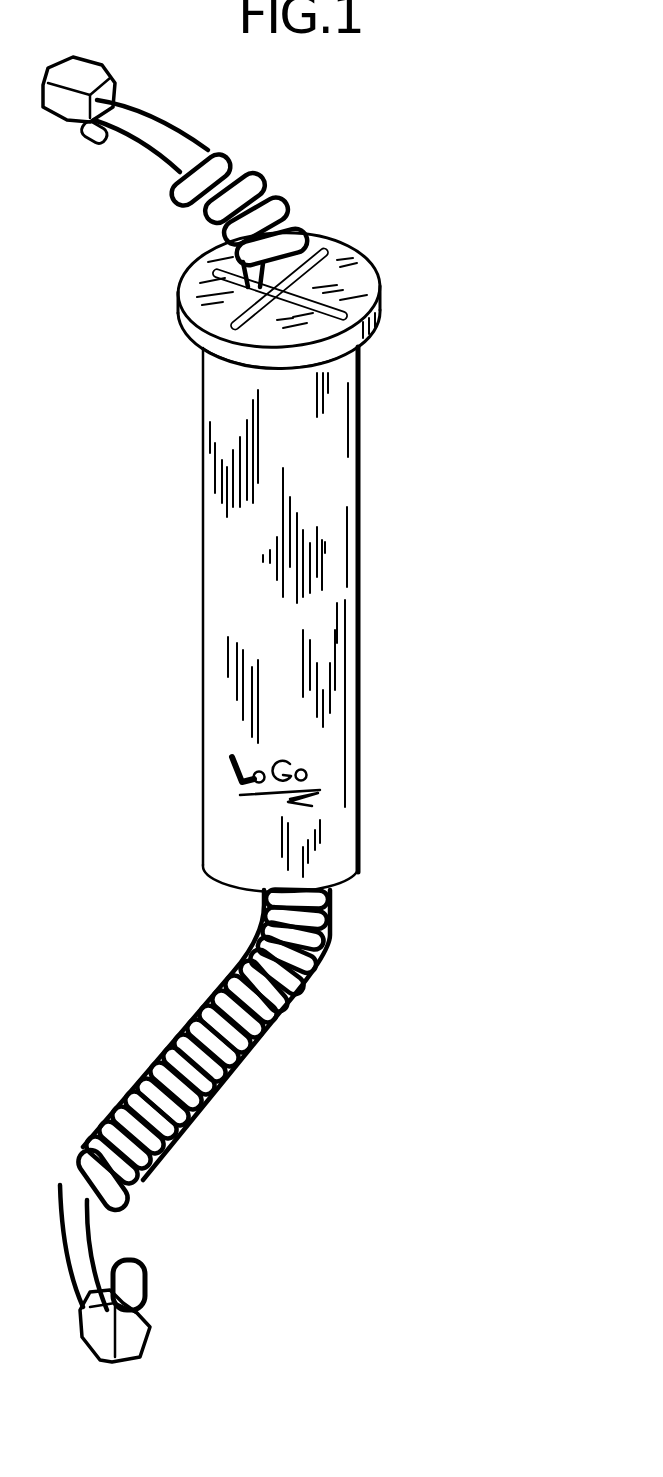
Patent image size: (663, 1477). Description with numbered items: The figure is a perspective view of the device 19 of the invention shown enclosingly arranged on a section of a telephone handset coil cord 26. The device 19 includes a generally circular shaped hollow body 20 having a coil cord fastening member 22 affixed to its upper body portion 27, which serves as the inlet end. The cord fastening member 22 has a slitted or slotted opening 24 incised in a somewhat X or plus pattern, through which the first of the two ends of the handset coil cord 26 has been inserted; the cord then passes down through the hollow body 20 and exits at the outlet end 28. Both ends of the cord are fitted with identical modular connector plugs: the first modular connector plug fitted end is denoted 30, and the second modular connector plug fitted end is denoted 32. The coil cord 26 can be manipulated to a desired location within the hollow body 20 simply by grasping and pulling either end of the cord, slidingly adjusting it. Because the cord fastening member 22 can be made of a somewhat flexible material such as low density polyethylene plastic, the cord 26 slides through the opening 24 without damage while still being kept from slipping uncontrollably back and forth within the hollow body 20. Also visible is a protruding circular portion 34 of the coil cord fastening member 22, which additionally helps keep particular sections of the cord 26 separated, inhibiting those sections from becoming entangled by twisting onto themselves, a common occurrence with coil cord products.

The device 19 is at (485, 166).
The hollow body 20 is at (215, 543).
The coil cord fastening member 22 is at (187, 272).
The slotted opening 24 is at (302, 292).
The telephone handset coil cord 26 is at (260, 1048).
The upper body portion 27 is at (205, 356).
The outlet end 28 is at (228, 885).
The first modular connector plug fitted end 30 is at (125, 1312).
The second modular connector plug fitted end 32 is at (70, 97).
The protruding circular portion 34 is at (187, 328).